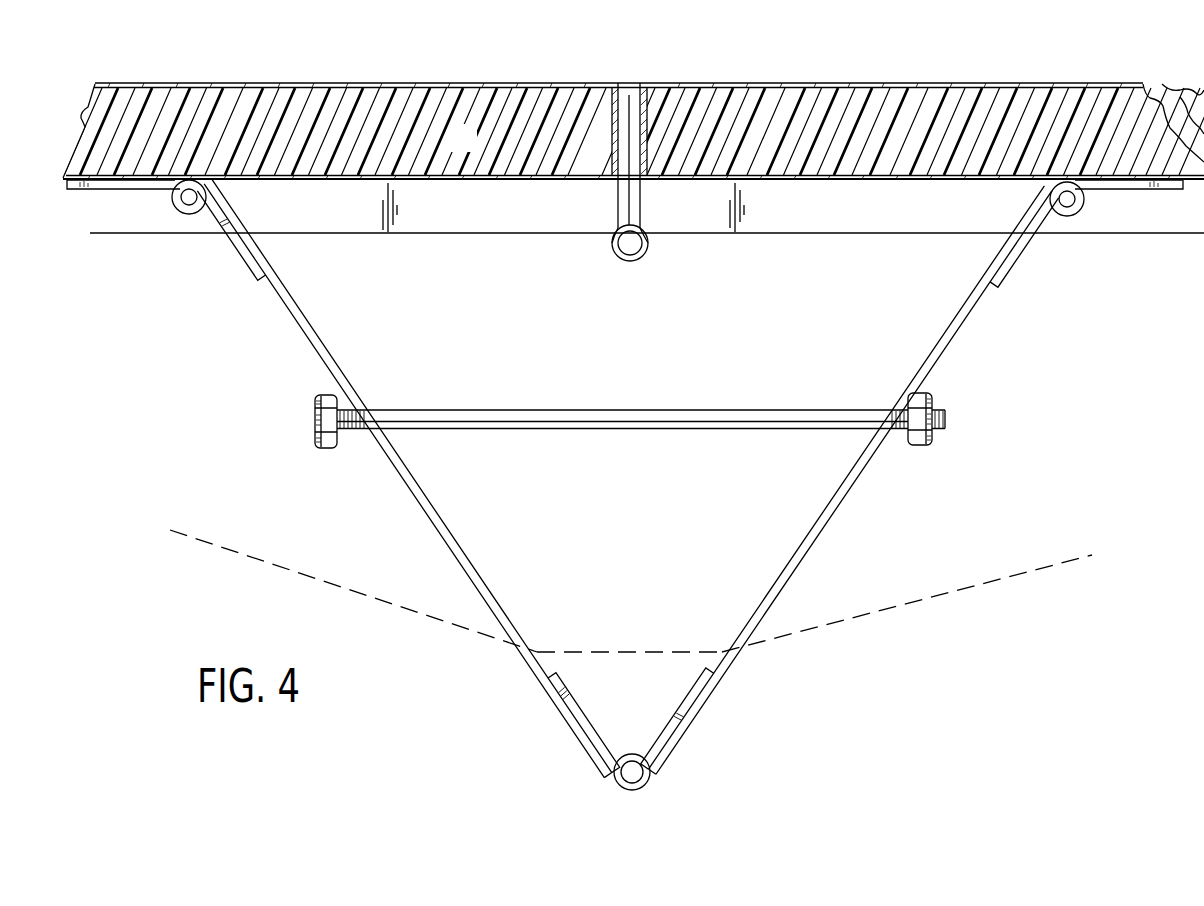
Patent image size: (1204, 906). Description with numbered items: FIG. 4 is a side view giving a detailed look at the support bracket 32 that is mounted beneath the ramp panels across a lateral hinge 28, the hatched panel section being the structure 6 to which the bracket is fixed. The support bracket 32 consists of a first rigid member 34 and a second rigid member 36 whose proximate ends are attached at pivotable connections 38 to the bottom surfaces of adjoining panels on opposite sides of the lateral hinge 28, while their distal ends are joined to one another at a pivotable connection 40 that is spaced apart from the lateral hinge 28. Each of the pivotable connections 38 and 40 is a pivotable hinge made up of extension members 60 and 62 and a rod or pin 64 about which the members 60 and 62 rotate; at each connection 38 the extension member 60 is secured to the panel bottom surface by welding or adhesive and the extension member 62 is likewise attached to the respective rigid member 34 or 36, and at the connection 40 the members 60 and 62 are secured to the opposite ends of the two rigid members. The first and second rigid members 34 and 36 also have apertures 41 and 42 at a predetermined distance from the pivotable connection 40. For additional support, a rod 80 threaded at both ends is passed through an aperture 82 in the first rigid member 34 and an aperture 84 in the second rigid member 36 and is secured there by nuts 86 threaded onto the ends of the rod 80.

The slab/roof deck 6 is at (472, 150).
The lateral hinge 28 is at (636, 122).
The support bracket 32 is at (738, 662).
The first rigid member 34 is at (436, 508).
The second rigid member 36 is at (878, 455).
The pivotable connection 38 is at (196, 176).
The pivotable connection 40 is at (650, 784).
The aperture 41 is at (762, 648).
The aperture 42 is at (528, 648).
The extension member 60 is at (123, 188).
The extension member 62 is at (236, 226).
The rod or pin 64 is at (188, 208).
The rod 80 is at (488, 409).
The aperture 82 is at (366, 410).
The aperture 84 is at (886, 409).
The nut 86 is at (336, 450).